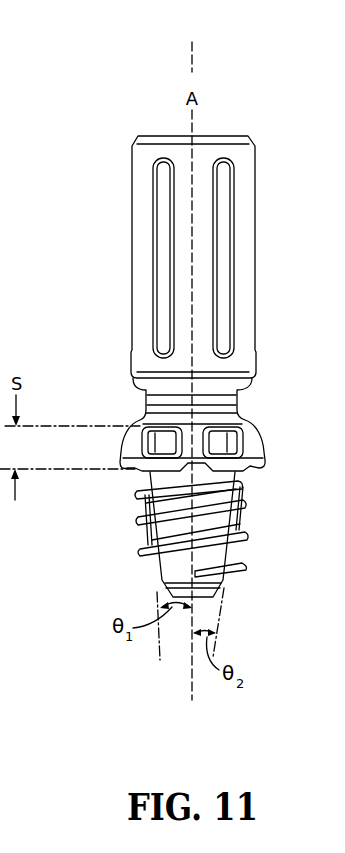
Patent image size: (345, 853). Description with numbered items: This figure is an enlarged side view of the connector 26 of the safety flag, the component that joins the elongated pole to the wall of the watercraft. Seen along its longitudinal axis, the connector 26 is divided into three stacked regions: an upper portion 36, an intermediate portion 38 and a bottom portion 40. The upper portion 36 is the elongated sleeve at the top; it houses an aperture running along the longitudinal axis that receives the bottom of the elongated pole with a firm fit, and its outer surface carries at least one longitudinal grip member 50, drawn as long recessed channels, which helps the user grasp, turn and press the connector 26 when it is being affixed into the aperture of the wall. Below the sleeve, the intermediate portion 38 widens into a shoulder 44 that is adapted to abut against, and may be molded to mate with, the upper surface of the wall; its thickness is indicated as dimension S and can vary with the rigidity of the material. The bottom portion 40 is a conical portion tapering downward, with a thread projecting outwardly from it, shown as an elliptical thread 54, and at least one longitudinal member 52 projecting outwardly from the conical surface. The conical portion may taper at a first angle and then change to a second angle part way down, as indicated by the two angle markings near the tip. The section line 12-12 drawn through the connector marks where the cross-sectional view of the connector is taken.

The cross-sectional view axis 12- 12 is at (202, 31).
The connector 26 is at (90, 166).
The upper portion 36 is at (282, 137).
The intermediate portion 38 is at (282, 378).
The bottom portion 40 is at (282, 475).
The shoulder 44 is at (136, 452).
The longitudinal grip member 50 is at (223, 228).
The longitudinal member 52 is at (172, 500).
The elliptical thread 54 is at (150, 556).